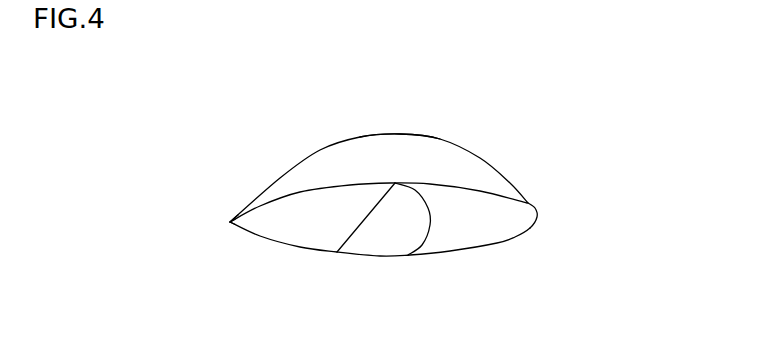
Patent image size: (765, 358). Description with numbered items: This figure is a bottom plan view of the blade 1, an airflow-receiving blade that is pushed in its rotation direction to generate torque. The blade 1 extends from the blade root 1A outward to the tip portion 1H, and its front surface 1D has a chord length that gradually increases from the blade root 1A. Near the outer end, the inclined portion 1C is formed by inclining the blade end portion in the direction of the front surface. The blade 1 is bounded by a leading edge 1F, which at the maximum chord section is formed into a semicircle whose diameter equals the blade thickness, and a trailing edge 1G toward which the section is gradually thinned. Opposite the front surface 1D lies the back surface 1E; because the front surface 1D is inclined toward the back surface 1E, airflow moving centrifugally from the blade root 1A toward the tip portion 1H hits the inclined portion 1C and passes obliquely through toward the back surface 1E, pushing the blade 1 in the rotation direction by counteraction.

The blade 1 is at (472, 117).
The blade root 1A is at (430, 227).
The inclined portion 1C is at (320, 150).
The front surface 1D is at (462, 188).
The back surface 1E is at (428, 255).
The leading edge 1F is at (538, 220).
The trailing edge 1G is at (230, 222).
The tip portion 1H is at (403, 135).